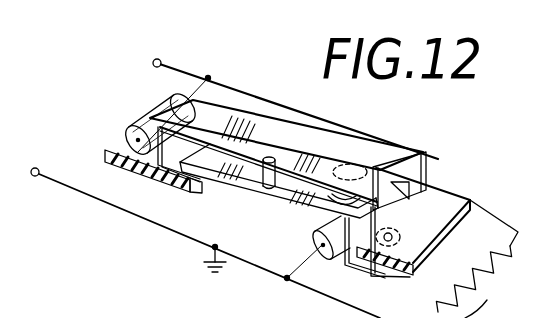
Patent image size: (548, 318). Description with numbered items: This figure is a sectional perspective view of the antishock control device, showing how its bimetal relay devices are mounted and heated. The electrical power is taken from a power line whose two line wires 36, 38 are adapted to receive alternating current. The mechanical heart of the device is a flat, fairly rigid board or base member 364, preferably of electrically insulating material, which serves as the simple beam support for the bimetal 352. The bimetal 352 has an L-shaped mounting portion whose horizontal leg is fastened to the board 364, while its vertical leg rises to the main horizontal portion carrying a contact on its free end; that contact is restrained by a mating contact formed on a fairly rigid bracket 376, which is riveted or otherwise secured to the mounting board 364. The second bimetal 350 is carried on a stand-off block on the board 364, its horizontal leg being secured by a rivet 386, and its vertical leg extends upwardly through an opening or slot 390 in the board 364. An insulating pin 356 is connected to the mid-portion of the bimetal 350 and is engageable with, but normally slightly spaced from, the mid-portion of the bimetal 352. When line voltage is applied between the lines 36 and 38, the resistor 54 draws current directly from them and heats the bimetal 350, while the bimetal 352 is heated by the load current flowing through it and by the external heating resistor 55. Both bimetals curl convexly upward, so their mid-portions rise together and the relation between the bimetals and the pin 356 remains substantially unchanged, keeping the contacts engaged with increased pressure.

The line wire 36 is at (183, 71).
The line wire 38 is at (88, 197).
The resistor 54 is at (318, 246).
The external heating resistor 55 is at (155, 109).
The bimetal relay device 350 is at (282, 192).
The bimetal relay device 352 is at (284, 145).
The insulating pin 356 is at (258, 178).
The board or base member 364 is at (124, 147).
The bracket 376 is at (421, 150).
The rivet 386 is at (400, 230).
The opening or slot 390 is at (202, 184).